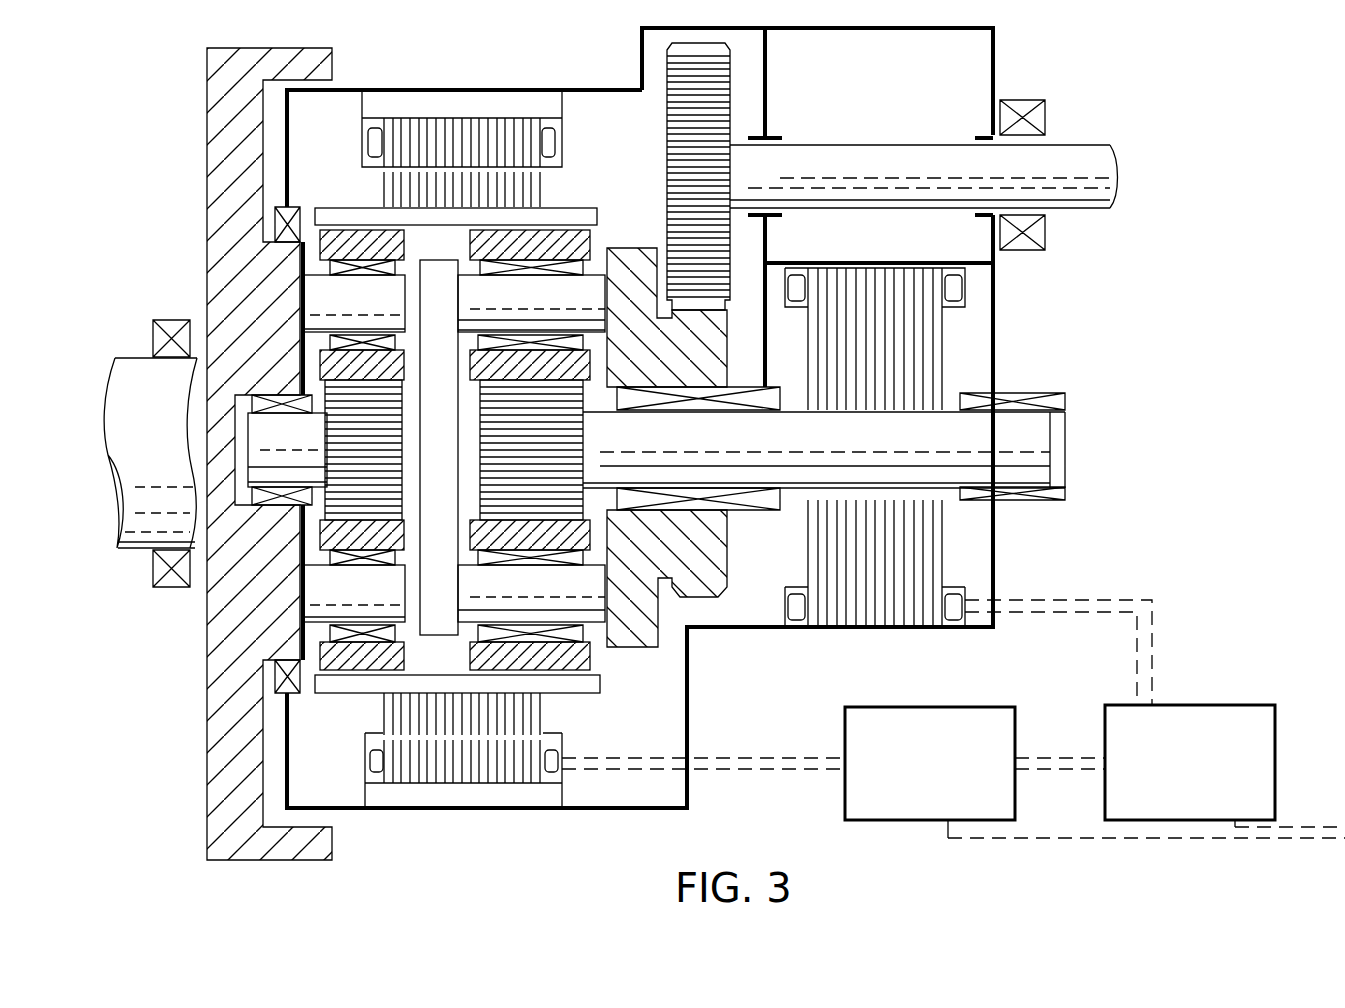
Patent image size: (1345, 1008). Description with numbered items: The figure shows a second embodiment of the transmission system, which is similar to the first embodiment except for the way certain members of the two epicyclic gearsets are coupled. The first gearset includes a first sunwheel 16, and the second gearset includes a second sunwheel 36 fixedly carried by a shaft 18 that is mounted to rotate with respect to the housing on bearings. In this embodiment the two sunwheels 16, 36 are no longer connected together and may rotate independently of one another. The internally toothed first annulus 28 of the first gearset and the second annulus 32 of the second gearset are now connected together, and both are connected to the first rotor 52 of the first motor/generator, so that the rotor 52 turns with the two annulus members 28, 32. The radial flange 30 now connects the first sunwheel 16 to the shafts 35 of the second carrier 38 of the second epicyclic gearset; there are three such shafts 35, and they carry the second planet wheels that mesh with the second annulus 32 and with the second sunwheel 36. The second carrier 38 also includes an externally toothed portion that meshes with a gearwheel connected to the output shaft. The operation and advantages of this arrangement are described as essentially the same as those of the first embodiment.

The first sunwheel 16 is at (372, 503).
The shaft 18 is at (1027, 420).
The first annulus 28 is at (357, 214).
The radial flange 30 is at (430, 318).
The second annulus 32 is at (592, 213).
The shafts 35 is at (480, 612).
The second sunwheel 36 is at (578, 455).
The second carrier 38 is at (620, 640).
The first rotor 52 is at (540, 192).